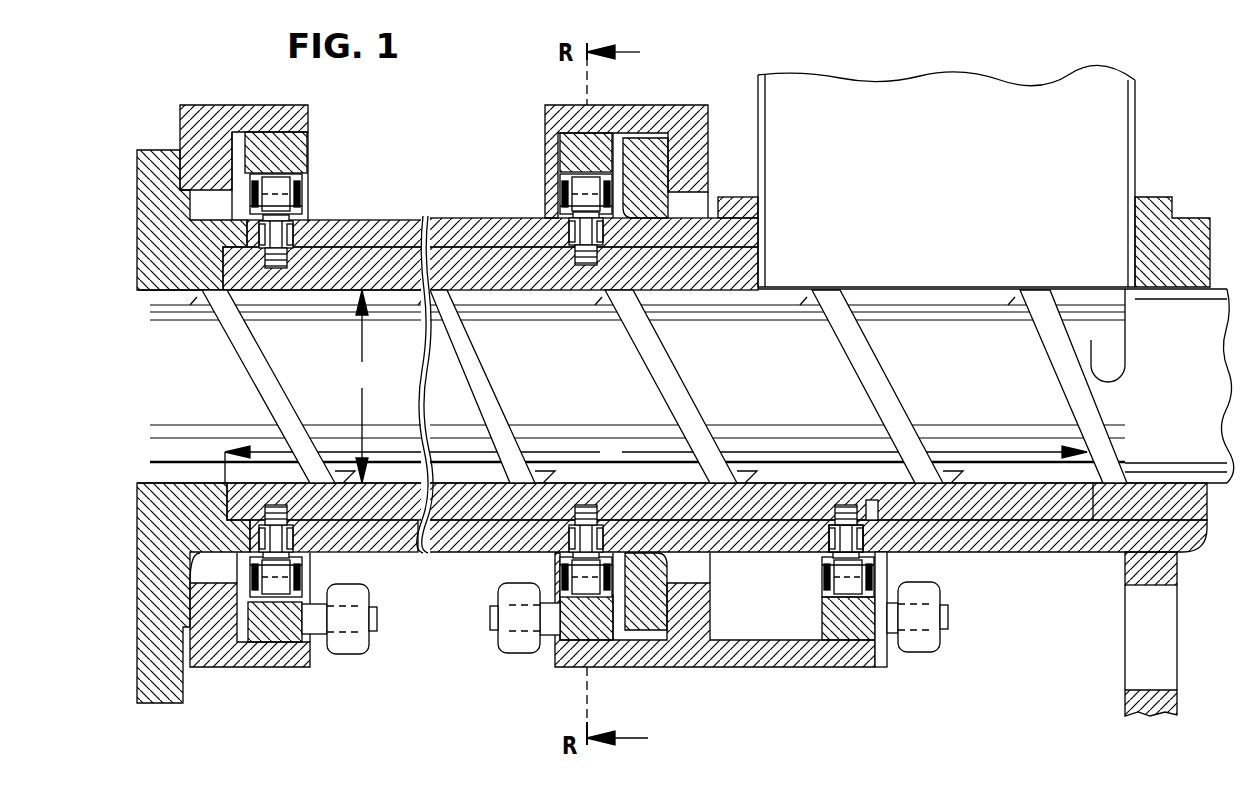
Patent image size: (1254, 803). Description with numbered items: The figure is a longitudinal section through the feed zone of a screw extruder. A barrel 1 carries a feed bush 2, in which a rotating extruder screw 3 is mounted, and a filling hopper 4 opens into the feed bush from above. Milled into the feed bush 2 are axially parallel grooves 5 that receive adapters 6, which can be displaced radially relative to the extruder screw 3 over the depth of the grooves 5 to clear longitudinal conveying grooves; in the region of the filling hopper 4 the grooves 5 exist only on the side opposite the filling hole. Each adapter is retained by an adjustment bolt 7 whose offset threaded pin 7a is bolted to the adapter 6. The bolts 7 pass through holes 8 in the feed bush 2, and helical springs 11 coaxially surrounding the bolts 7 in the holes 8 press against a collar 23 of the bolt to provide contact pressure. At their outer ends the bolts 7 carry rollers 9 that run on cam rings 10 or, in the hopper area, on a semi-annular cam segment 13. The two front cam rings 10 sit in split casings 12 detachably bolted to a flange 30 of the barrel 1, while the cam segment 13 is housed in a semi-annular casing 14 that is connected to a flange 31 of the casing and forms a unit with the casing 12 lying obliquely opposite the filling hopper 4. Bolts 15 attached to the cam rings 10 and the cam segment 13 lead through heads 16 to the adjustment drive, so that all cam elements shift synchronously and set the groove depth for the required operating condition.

The barrel 1 is at (1180, 243).
The feed bush 2 is at (488, 234).
The extruder screw 3 is at (381, 328).
The filling hopper 4 is at (956, 184).
The grooves 5 is at (1030, 518).
The adapters 6 is at (982, 502).
The bolts 7 is at (848, 538).
The offset threaded pins 7a is at (873, 513).
The holes 8 is at (832, 542).
The rollers 9 is at (600, 577).
The cam rings 10 is at (292, 155).
The helical springs 11 is at (563, 535).
The split casings 12 is at (227, 122).
The cam segment 13 is at (837, 627).
The semi-annular casing 14 is at (838, 655).
The bolts 15 is at (318, 634).
The heads 16 is at (350, 652).
The collar 23 is at (868, 595).
The flange 30 is at (157, 190).
The flange 31 is at (645, 147).